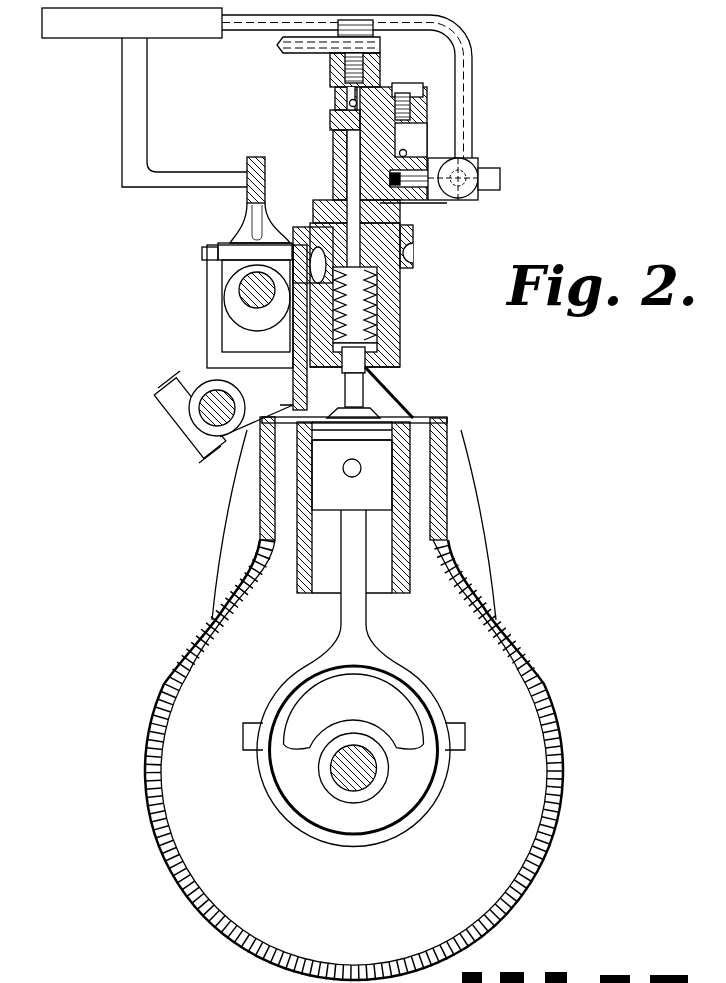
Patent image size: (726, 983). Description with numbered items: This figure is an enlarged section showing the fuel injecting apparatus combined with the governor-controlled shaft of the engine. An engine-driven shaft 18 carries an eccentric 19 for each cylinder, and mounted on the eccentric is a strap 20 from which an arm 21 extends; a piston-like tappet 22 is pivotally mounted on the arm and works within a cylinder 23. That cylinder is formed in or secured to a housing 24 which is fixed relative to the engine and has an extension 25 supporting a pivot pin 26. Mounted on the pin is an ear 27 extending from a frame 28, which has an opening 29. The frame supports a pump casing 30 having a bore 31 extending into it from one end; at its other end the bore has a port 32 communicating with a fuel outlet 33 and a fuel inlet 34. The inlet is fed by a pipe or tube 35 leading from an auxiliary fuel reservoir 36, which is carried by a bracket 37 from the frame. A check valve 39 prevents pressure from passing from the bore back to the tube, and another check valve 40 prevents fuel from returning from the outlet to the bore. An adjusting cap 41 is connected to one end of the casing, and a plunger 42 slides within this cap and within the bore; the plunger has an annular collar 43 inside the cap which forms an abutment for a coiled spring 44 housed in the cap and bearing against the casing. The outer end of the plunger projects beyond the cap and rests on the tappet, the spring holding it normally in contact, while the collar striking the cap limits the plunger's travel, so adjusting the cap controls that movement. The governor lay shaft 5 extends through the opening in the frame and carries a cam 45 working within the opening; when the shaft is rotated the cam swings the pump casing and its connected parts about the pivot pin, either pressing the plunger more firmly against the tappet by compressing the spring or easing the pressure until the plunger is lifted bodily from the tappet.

The governor lay shaft 5 is at (247, 278).
The shaft 18 is at (360, 783).
The eccentric 19 is at (297, 767).
The strap 20 is at (445, 712).
The arm 21 is at (357, 612).
The piston-like tappet 22 is at (378, 483).
The cylinder 23 is at (407, 537).
The housing 24 is at (497, 627).
The extension 25 is at (230, 480).
The pivot pin 26 is at (202, 418).
The ear 27 is at (178, 393).
The frame 28 is at (308, 392).
The opening 29 is at (220, 337).
The pump casing 30 is at (400, 215).
The bore 31 is at (342, 180).
The port 32 is at (333, 113).
The fuel outlet 33 is at (365, 85).
The fuel inlet 34 is at (403, 133).
The pipe or tube 35 is at (470, 90).
The auxiliary fuel reservoir 36 is at (95, 28).
The bracket 37 is at (140, 112).
The check valve 39 is at (423, 148).
The check valve 40 is at (352, 100).
The adjusting cap 41 is at (400, 350).
The plunger 42 is at (377, 307).
The annular collar 43 is at (387, 333).
The coiled spring 44 is at (382, 283).
The cam 45 is at (237, 310).